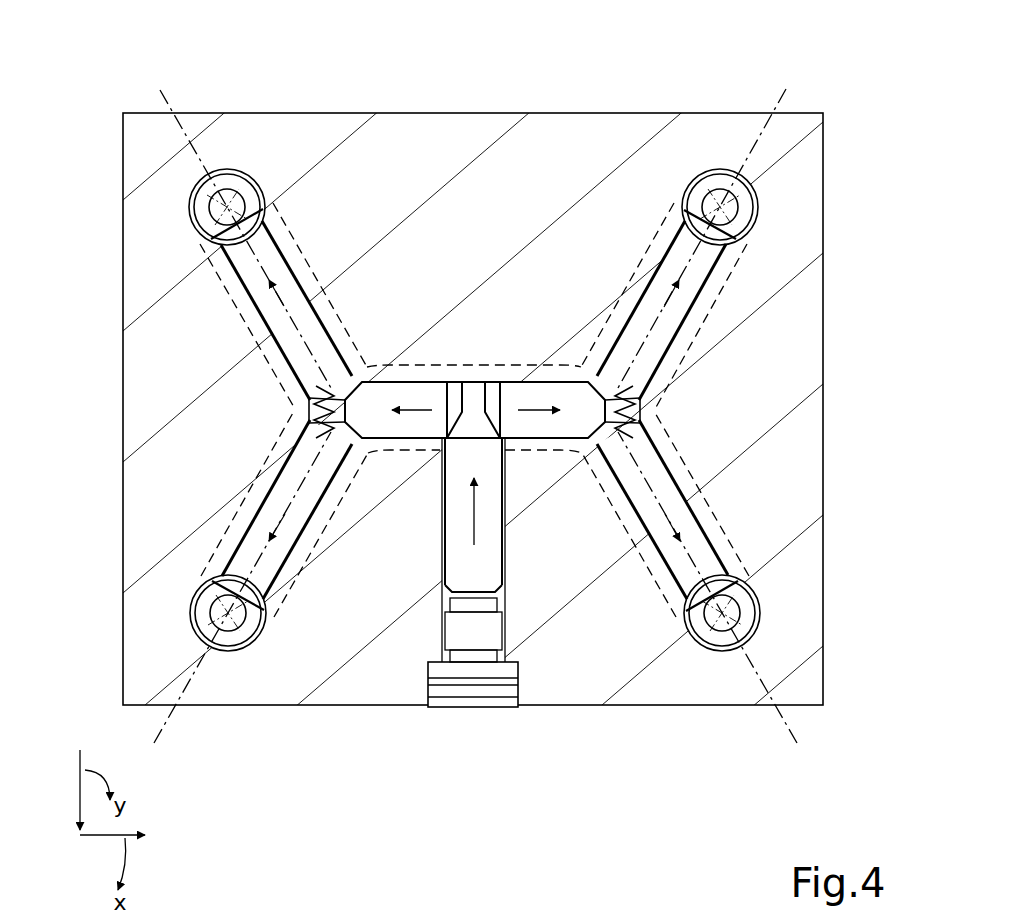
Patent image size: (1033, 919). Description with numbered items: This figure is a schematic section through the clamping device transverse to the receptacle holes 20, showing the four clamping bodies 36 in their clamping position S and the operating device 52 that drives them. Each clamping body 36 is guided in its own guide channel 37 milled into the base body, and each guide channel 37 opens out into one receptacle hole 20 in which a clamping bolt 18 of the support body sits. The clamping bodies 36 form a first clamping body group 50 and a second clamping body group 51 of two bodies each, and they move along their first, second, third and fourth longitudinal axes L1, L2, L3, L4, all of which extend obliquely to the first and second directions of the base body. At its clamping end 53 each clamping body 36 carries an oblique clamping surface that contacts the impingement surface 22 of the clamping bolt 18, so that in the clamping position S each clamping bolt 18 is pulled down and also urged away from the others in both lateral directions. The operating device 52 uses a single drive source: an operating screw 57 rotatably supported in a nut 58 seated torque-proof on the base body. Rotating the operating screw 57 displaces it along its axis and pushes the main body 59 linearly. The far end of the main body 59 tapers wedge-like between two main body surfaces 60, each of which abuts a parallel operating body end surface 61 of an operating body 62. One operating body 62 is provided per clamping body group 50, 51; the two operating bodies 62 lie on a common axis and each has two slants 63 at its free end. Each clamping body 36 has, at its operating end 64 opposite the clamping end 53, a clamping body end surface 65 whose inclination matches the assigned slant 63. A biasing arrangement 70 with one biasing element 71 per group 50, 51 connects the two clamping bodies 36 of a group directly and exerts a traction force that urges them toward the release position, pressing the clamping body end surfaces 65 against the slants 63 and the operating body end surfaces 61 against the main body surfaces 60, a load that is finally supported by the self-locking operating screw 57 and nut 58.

The receptacle hole 20 is at (240, 170).
The impingement surface 22 is at (760, 205).
The clamping bolt 18 is at (748, 238).
The operating device 52 is at (408, 716).
The clamping end 53 is at (270, 203).
The guide channel 37 is at (298, 240).
The clamping position S is at (330, 248).
The clamping body 36 is at (348, 330).
The main body surface 60 is at (462, 382).
The operating body 62 is at (452, 410).
The slant 63 is at (360, 380).
The operating end 64 is at (258, 290).
The clamping body end surface 65 is at (362, 404).
The biasing element 71 is at (305, 410).
The first clamping body group 50 is at (228, 332).
The second clamping body group 51 is at (737, 320).
The biasing arrangement 70 is at (240, 420).
The operating body end surface 61 is at (445, 442).
The main body 59 is at (444, 538).
The nut 58 is at (500, 632).
The operating screw 57 is at (496, 708).
The first longitudinal axis L1 is at (168, 95).
The second longitudinal axis L2 is at (176, 740).
The third longitudinal axis L3 is at (772, 95).
The fourth longitudinal axis L4 is at (805, 746).